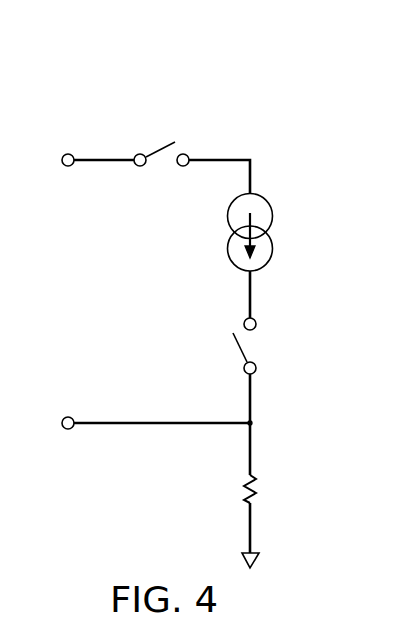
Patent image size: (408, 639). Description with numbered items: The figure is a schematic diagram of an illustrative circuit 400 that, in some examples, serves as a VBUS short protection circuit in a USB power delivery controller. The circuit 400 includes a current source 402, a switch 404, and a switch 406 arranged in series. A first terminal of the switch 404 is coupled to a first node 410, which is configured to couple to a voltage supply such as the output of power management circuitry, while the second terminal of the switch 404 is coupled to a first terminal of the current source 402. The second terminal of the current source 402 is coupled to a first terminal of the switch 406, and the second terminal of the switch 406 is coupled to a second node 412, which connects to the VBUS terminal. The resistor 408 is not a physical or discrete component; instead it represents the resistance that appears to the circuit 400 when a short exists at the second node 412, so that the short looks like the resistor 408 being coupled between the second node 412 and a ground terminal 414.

The circuit 400 is at (211, 62).
The current source 402 is at (273, 213).
The switch 404 is at (160, 149).
The switch 406 is at (240, 352).
The resistor 408 is at (256, 490).
The first node 410 is at (67, 154).
The second node 412 is at (66, 430).
The ground terminal 414 is at (253, 565).